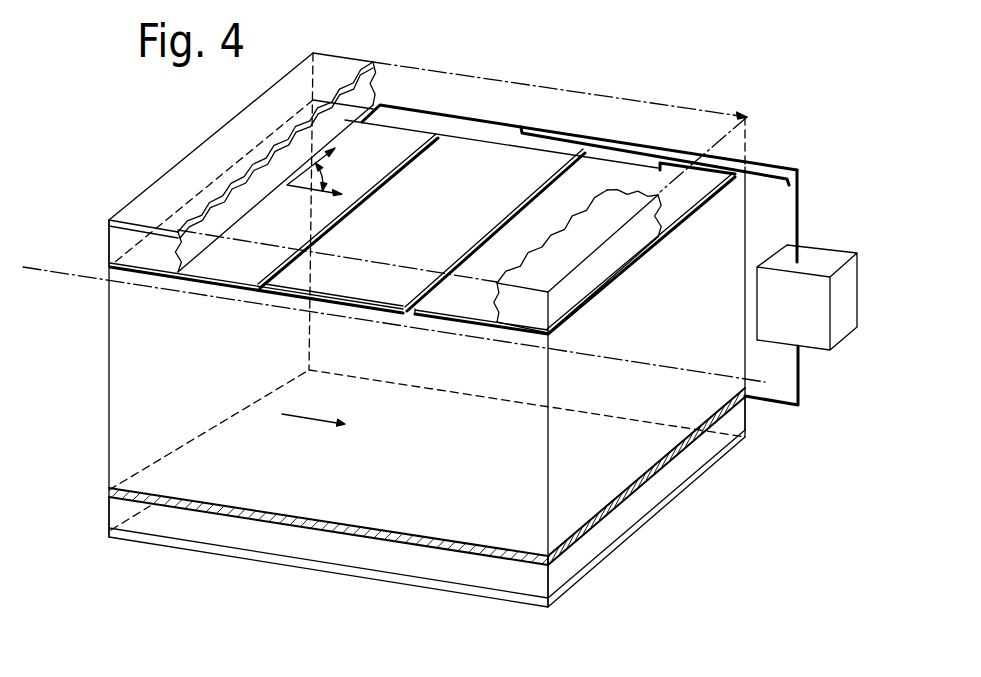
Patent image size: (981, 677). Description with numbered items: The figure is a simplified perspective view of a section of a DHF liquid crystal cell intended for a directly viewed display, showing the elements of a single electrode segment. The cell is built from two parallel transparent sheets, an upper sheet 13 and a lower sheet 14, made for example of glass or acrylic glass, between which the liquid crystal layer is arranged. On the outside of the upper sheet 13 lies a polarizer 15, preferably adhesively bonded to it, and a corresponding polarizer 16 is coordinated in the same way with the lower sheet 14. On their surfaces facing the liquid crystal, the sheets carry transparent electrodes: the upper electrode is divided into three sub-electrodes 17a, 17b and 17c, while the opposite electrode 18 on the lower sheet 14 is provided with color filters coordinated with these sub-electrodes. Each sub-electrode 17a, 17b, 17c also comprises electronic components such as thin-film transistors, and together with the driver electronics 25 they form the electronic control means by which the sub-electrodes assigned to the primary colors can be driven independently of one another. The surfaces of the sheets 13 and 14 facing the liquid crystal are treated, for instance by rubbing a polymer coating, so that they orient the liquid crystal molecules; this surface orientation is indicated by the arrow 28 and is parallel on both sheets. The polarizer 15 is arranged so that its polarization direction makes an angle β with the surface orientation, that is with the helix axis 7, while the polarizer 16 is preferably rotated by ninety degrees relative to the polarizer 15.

The helix axis 7 is at (78, 277).
The upper sheet 13 is at (109, 246).
The lower sheet 14 is at (109, 510).
The polarizer 15 is at (109, 220).
The polarizer 16 is at (109, 533).
The sub-electrode 17a is at (403, 111).
The sub-electrode 17b is at (518, 128).
The sub-electrode 17c is at (620, 161).
The electrode 18 is at (108, 489).
The driver electronics 25 is at (790, 263).
The arrow 28 is at (305, 192).